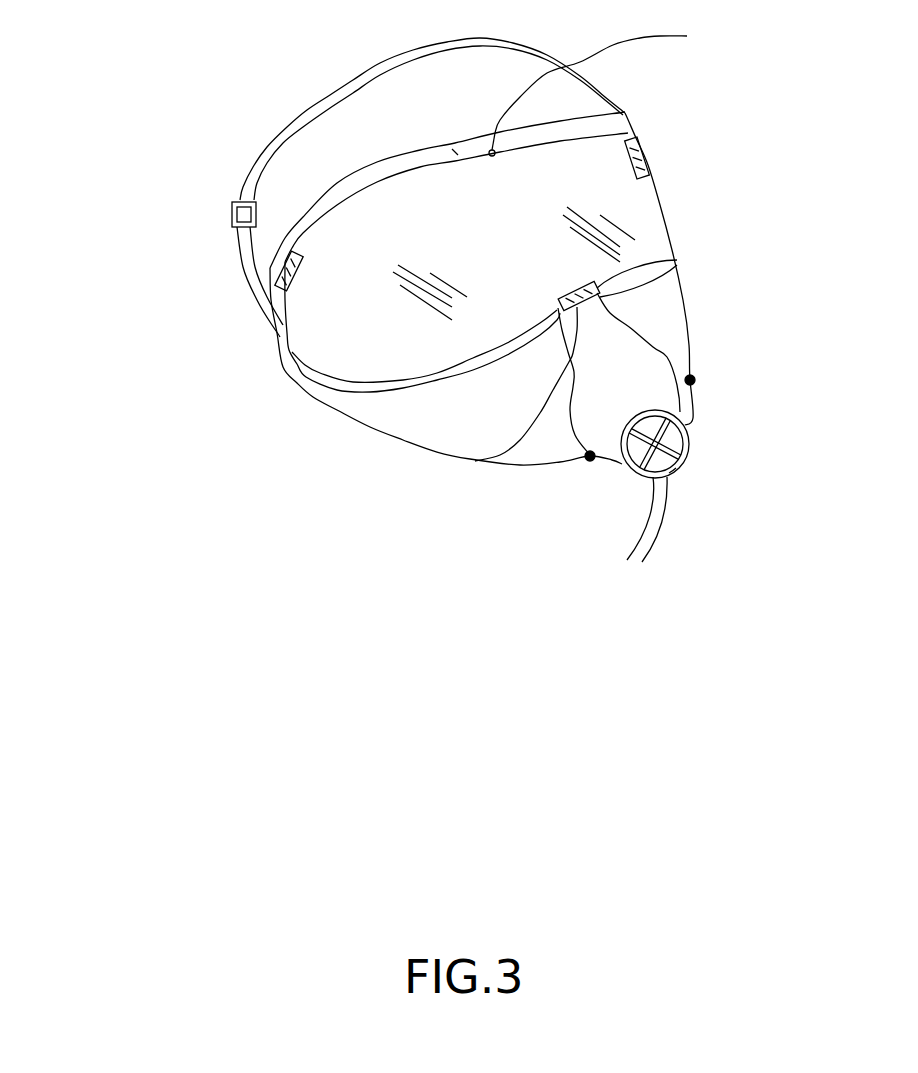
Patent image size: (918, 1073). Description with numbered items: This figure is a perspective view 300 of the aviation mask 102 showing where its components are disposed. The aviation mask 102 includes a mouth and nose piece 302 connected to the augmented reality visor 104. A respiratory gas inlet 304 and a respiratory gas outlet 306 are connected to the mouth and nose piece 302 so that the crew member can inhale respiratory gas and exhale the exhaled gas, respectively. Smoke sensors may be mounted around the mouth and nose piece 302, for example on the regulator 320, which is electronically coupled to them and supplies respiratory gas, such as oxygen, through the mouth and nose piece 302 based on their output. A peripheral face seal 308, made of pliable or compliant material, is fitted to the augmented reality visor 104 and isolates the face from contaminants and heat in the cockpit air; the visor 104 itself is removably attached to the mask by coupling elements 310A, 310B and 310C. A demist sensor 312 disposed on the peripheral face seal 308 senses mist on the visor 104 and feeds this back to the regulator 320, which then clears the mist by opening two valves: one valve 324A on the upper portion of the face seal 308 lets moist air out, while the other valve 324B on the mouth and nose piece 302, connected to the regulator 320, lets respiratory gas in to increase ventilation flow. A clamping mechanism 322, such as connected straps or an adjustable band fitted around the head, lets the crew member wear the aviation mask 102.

The aviation mask 102 is at (220, 478).
The augmented reality visor 104 is at (357, 340).
The perspective view 300 is at (600, 738).
The mouth and nose piece 302 is at (658, 382).
The respiratory gas inlet 304 is at (658, 505).
The respiratory gas outlet 306 is at (673, 468).
The peripheral face seal 308 is at (600, 128).
The coupling element 310A is at (650, 170).
The coupling element 310B is at (283, 270).
The coupling element 310C is at (500, 462).
The demist sensor 312 is at (455, 142).
The regulator 320 is at (690, 442).
The clamping mechanism 322 is at (297, 107).
The valve 324A is at (616, 80).
The valve 324B is at (677, 261).